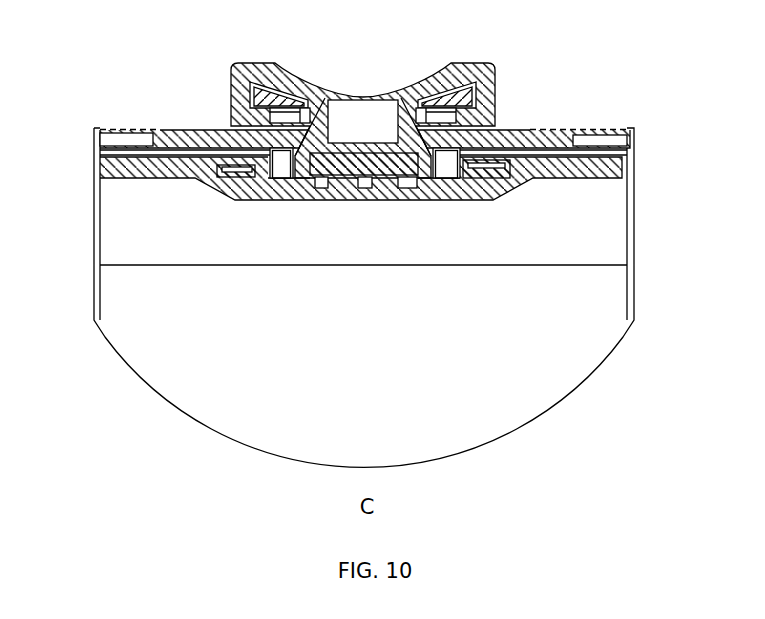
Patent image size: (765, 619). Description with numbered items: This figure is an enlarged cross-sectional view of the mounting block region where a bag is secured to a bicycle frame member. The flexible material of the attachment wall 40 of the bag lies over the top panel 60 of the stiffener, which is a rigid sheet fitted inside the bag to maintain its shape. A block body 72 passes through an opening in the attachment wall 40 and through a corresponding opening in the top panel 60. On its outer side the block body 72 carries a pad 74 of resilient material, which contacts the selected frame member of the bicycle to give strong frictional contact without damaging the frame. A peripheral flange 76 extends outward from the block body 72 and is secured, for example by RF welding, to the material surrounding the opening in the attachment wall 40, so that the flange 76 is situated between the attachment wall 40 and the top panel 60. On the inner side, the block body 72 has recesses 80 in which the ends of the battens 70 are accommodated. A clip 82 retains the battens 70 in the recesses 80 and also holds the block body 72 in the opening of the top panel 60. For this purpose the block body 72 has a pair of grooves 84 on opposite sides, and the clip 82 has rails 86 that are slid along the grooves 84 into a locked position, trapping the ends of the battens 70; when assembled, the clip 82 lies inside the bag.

The attachment wall 40 is at (101, 128).
The top panel 60 is at (118, 155).
The batten 70 is at (397, 200).
The block body 72 is at (530, 133).
The pad 74 is at (471, 76).
The peripheral flange 76 is at (163, 147).
The recess 80 is at (313, 200).
The clip 82 is at (597, 165).
The groove 84 is at (228, 172).
The rail 86 is at (268, 166).